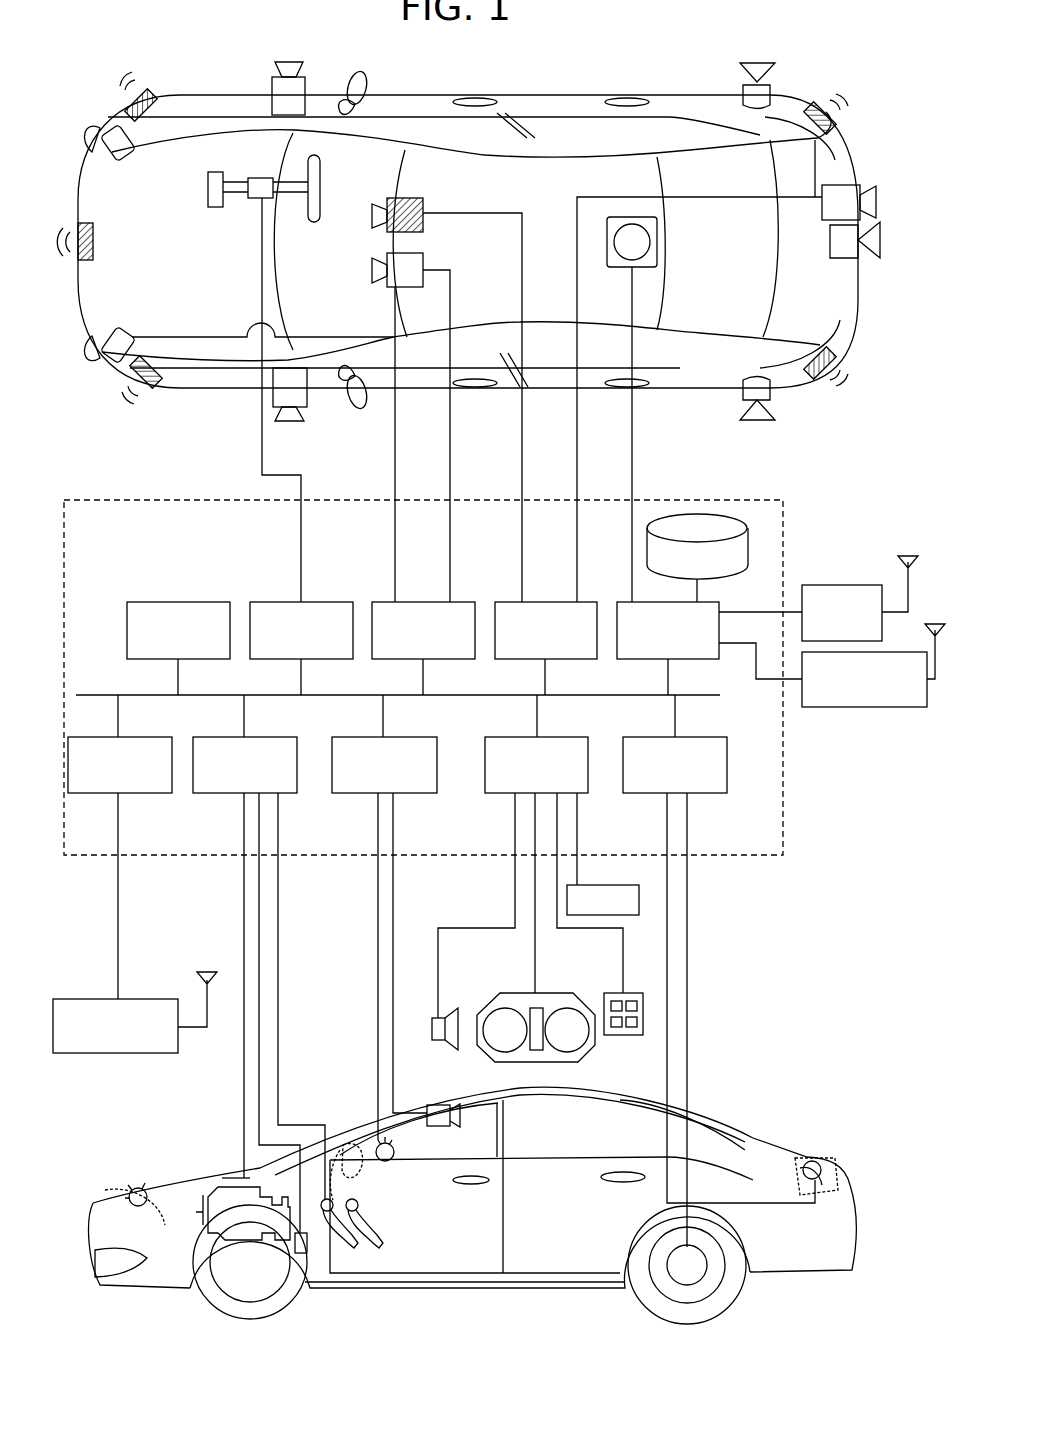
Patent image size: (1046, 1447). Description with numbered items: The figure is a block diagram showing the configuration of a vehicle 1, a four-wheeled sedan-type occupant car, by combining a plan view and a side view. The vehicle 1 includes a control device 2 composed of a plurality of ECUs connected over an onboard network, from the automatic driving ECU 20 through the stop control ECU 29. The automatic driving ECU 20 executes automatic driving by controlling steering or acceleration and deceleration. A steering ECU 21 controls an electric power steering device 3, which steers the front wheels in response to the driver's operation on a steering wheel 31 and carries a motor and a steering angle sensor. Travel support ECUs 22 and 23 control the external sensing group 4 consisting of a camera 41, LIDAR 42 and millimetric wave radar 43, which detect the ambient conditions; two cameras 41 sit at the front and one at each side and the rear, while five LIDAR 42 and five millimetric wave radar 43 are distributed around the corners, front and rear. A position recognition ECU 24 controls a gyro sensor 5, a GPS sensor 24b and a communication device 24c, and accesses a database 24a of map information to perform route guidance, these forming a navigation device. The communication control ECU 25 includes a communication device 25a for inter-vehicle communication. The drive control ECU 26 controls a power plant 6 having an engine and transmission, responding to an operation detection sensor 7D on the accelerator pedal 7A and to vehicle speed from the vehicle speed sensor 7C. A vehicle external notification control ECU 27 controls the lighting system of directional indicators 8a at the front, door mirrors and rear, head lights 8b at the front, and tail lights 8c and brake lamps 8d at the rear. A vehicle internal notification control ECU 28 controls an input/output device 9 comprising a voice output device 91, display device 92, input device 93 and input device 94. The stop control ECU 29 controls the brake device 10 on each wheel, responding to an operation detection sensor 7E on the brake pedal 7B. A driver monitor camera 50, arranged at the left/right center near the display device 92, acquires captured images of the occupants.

The vehicle 1 is at (870, 162).
The control device 2 is at (748, 858).
The electric power steering device 3 is at (216, 207).
The steering wheel 31 is at (314, 224).
The external sensor group 4 is at (100, 102).
The gyro sensor 5 is at (657, 235).
The camera 41 is at (272, 85).
The LIDAR 42 is at (130, 165).
The millimetric wave radar 43 is at (152, 115).
The automatic driving ECU 20 is at (212, 602).
The steering ECU 21 is at (335, 602).
The travel support ECU 22 is at (425, 602).
The travel support ECU 23 is at (552, 602).
The position recognition ECU 24 is at (618, 602).
The database of map information 24a is at (696, 512).
The GPS sensor 24b is at (846, 584).
The communication device 24c is at (845, 708).
The communication control ECU 25 is at (148, 795).
The communication device 25a is at (112, 1054).
The drive control ECU 26 is at (218, 795).
The vehicle external notification control ECU 27 is at (416, 795).
The vehicle internal notification control ECU 28 is at (495, 795).
The stop control ECU 29 is at (712, 795).
The power plant 6 is at (230, 1185).
The accelerator pedal 7A is at (356, 1250).
The brake pedal 7B is at (376, 1232).
The vehicle speed sensor 7C is at (300, 1255).
The operation detection sensor 7D is at (337, 1150).
The operation detection sensor 7E is at (357, 1200).
The directional indicators 8a is at (128, 1195).
The head lights 8b is at (127, 1213).
The tail lights 8c is at (832, 1195).
The brake lamps 8d is at (835, 1170).
The input/output device 9 is at (470, 1066).
The voice output device 91 is at (432, 1020).
The display device 92 is at (480, 1020).
The input device 93 is at (605, 886).
The input device 94 is at (634, 1036).
The brake device 10 is at (692, 1287).
The driver monitor camera 50 is at (443, 1127).